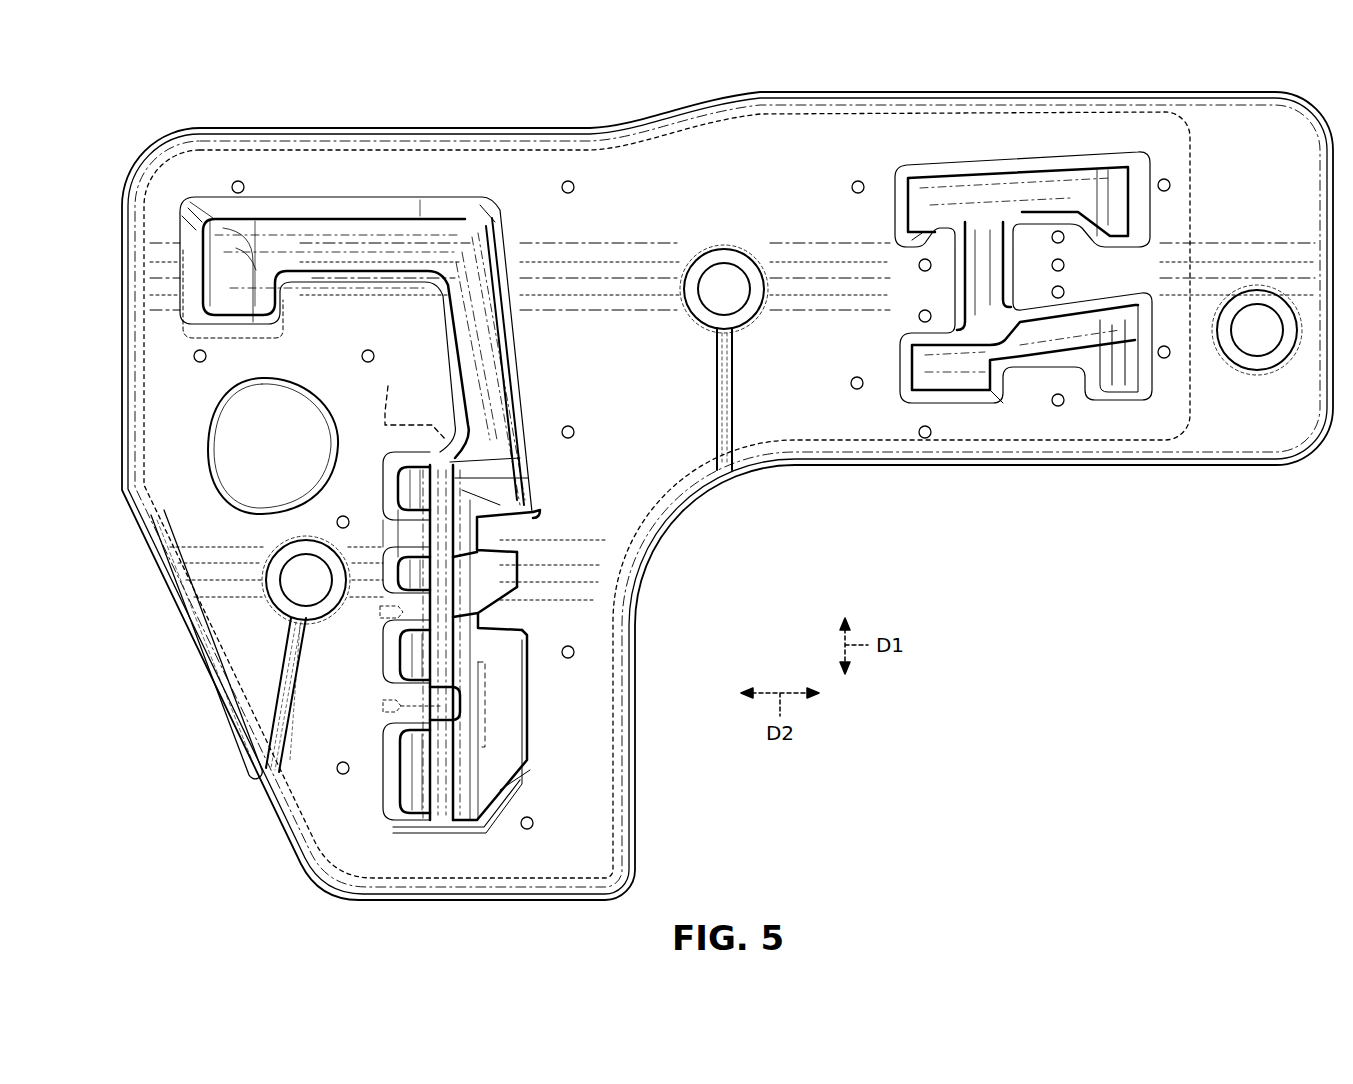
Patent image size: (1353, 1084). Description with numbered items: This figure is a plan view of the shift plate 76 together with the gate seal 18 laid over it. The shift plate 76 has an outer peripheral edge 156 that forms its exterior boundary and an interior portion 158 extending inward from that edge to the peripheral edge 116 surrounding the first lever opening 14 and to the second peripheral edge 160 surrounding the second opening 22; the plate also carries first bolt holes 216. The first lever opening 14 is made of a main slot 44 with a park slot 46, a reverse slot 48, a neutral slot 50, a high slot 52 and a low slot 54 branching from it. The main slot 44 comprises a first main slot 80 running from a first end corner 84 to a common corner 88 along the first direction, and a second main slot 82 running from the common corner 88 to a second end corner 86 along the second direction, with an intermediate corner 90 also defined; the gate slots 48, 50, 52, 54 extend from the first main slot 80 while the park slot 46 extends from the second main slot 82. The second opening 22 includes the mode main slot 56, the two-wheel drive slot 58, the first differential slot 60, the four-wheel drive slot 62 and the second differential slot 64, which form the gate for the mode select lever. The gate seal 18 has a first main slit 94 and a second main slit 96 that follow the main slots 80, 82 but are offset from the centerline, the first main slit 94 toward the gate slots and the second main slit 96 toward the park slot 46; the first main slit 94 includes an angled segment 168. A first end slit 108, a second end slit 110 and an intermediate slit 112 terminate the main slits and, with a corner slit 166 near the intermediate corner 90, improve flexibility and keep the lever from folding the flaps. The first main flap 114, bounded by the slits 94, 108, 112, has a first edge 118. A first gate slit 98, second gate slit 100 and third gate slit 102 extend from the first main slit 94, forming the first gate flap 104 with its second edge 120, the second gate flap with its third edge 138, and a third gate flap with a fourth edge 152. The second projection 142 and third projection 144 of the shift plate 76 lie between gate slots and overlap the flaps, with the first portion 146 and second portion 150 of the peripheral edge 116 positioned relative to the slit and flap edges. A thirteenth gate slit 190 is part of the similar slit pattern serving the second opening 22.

The first lever opening 14 is at (535, 361).
The gate seal 18 is at (441, 228).
The second opening 22 is at (1028, 375).
The main slot 44 is at (356, 296).
The park slot 46 is at (253, 322).
The reverse slot 48 is at (393, 468).
The neutral slot 50 is at (398, 575).
The high slot 52 is at (398, 662).
The low slot 54 is at (398, 795).
The mode main slot 56 is at (982, 175).
The two-wheel drive slot 58 is at (905, 365).
The first differential slot 60 is at (1120, 400).
The four-wheel drive slot 62 is at (895, 240).
The second differential slot 64 is at (1122, 247).
The shift plate 76 is at (696, 506).
The first main slot 80 is at (516, 377).
The second main slot 82 is at (312, 208).
The first end corner 84 is at (482, 824).
The second end corner 86 is at (212, 218).
The common corner 88 is at (500, 205).
The intermediate corner 90 is at (524, 458).
The first main slit 94 is at (440, 335).
The second main slit 96 is at (384, 262).
The first gate slit 98 is at (390, 832).
The second gate slit 100 is at (383, 706).
The third gate slit 102 is at (400, 612).
The first gate flap 104 is at (412, 775).
The first end slit 108 is at (479, 832).
The second end slit 110 is at (180, 250).
The intermediate slit 112 is at (478, 238).
The first main flap 114 is at (490, 578).
The peripheral edge 116 is at (254, 216).
The first edge 118 is at (400, 814).
The second edge 120 is at (505, 793).
The third edge 138 is at (442, 655).
The second projection 142 is at (400, 620).
The third projection 144 is at (403, 530).
The first portion 146 is at (462, 707).
The second portion 150 is at (486, 614).
The fourth edge 152 is at (493, 553).
The outer peripheral edge 156 is at (663, 105).
The interior portion 158 is at (757, 140).
The second peripheral edge 160 is at (970, 392).
The corner slit 166 is at (408, 400).
The angled segment 168 is at (532, 480).
The thirteenth gate slit 190 is at (415, 693).
The first bolt hole 216 is at (722, 280).